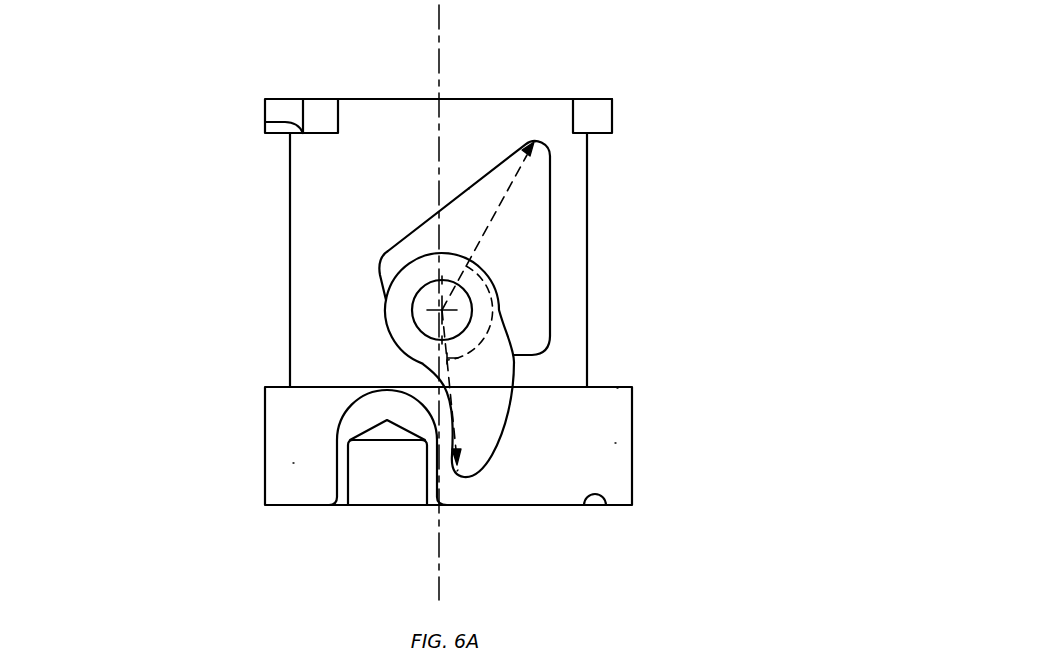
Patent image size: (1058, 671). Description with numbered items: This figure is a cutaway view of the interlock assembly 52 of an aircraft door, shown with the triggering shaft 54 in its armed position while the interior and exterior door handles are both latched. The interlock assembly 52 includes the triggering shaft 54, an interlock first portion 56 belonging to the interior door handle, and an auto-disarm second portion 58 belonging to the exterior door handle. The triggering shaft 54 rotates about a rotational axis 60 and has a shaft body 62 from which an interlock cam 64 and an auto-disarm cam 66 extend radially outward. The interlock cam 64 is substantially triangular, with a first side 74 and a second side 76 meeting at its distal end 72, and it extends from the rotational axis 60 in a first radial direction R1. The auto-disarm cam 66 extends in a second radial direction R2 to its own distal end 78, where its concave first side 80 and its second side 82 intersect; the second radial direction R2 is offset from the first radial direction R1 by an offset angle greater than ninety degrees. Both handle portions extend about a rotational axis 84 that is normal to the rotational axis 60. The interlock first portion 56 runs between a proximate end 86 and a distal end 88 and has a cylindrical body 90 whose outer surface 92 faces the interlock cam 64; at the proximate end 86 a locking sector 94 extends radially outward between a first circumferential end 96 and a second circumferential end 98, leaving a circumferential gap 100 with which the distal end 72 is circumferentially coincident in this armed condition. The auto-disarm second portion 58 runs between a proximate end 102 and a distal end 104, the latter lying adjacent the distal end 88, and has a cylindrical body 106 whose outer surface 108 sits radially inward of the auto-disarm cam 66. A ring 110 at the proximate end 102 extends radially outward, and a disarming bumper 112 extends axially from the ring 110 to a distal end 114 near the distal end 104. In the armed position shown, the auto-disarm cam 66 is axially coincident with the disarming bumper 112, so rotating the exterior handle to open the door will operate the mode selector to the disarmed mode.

The interlock assembly 52 is at (464, 300).
The triggering shaft 54 is at (496, 312).
The interlock first portion 56 is at (472, 300).
The auto-disarm second portion 58 is at (464, 426).
The rotational axis 60 is at (406, 310).
The shaft body 62 is at (539, 310).
The interlock cam 64 is at (515, 210).
The auto-disarm cam 66 is at (485, 405).
The distal end 72 is at (536, 104).
The first side 74 is at (433, 168).
The second side 76 is at (601, 202).
The distal end 78 is at (482, 514).
The first side 80 is at (394, 465).
The second side 82 is at (547, 412).
The rotational axis 84 is at (383, 300).
The proximate end 86 is at (290, 90).
The distal end 88 is at (650, 402).
The cylindrical body 90 is at (410, 260).
The outer surface 92 is at (280, 260).
The locking sector 94 is at (617, 96).
The first circumferential end 96 is at (303, 91).
The second circumferential end 98 is at (588, 57).
The circumferential gap 100 is at (455, 87).
The proximate end 102 is at (262, 526).
The distal end 104 is at (618, 364).
The cylindrical body 106 is at (662, 440).
The outer surface 108 is at (241, 442).
The ring 110 is at (632, 530).
The disarming bumper 112 is at (334, 395).
The distal end 114 is at (307, 338).
The first radial direction R1 is at (485, 226).
The second radial direction R2 is at (423, 365).